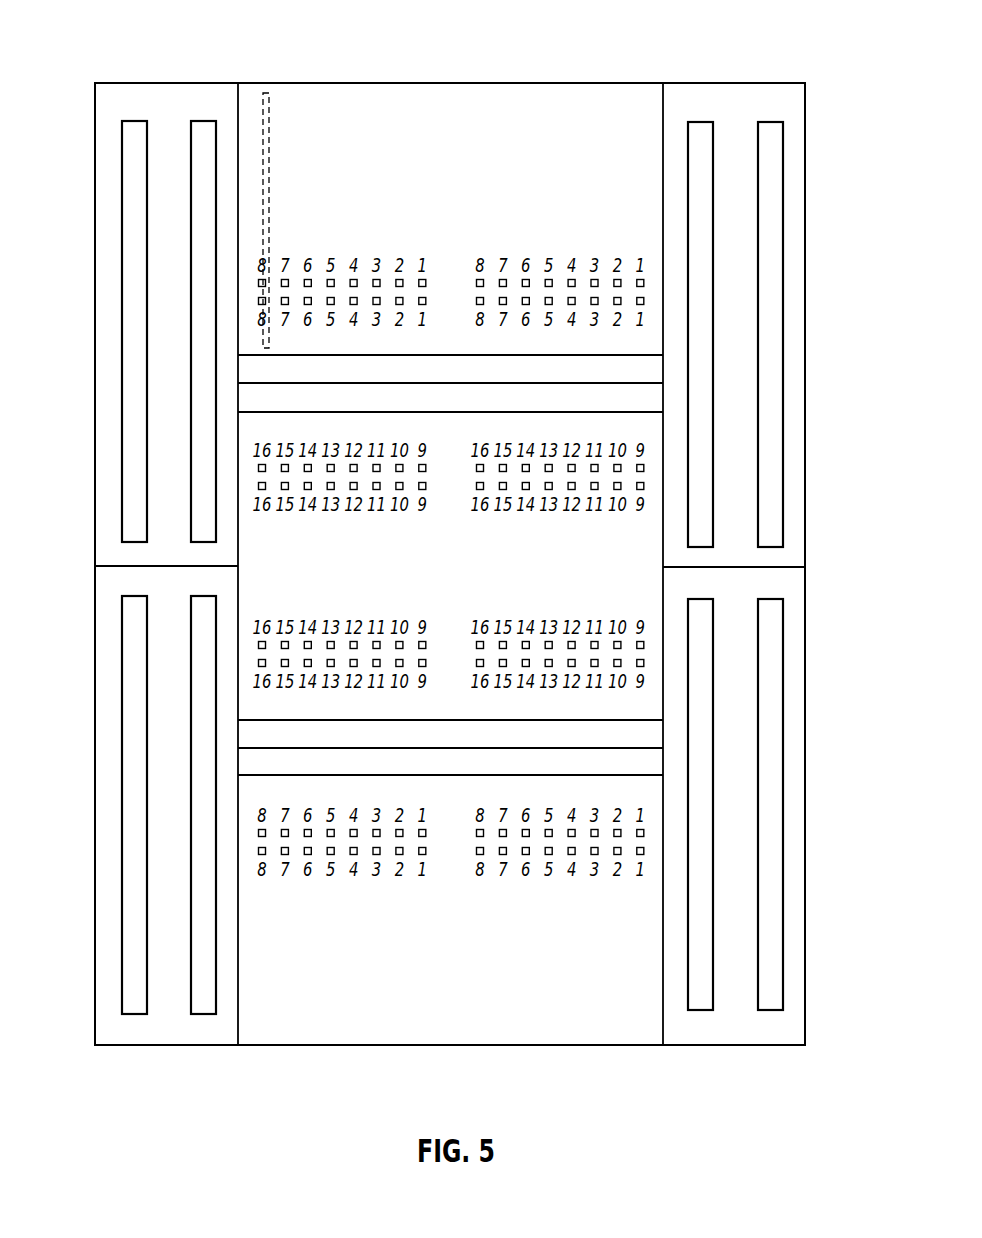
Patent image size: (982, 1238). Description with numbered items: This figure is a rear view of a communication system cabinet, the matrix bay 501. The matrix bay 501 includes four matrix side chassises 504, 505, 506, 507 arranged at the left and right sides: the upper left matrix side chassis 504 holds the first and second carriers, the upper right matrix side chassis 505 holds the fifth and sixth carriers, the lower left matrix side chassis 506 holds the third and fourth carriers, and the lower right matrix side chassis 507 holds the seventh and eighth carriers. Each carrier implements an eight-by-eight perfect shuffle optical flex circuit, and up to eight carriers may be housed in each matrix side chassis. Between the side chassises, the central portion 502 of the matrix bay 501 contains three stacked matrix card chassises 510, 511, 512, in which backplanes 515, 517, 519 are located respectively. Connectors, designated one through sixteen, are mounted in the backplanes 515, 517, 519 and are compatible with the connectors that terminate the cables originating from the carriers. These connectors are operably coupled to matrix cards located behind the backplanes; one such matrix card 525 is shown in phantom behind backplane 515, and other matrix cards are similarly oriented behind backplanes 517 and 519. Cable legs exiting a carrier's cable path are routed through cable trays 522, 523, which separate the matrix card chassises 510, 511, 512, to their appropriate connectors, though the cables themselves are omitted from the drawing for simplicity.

The matrix bay 501 is at (815, 177).
The center section 502 is at (450, 66).
The matrix side chassis 504 is at (134, 310).
The matrix side chassis 505 is at (767, 310).
The matrix side chassis 506 is at (123, 784).
The matrix side chassis 507 is at (780, 783).
The matrix card chassis 510 is at (451, 203).
The matrix card chassis 511 is at (563, 568).
The matrix card chassis 512 is at (482, 930).
The backplane 515 is at (470, 185).
The backplane 517 is at (470, 593).
The backplane 519 is at (466, 977).
The cable tray 522 is at (555, 362).
The cable tray 523 is at (552, 723).
The matrix card 525 is at (298, 220).